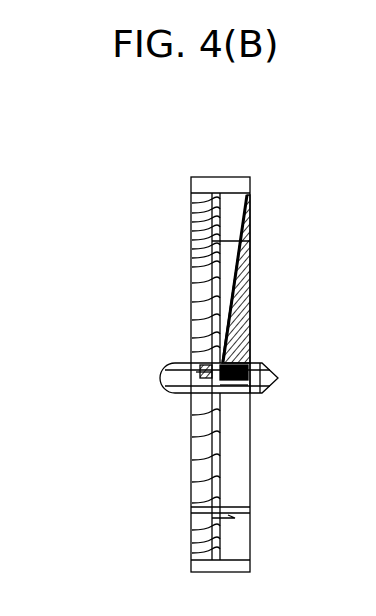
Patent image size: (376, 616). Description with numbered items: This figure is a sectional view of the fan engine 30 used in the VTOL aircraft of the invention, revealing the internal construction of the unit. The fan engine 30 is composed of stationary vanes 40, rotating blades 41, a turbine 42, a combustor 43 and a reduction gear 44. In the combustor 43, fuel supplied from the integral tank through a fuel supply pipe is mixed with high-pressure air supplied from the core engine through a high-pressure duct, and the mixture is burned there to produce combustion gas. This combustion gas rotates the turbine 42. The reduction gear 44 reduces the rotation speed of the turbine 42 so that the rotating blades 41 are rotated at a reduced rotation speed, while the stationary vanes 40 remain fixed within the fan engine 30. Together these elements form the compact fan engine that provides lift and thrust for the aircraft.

The fan engine 30 is at (174, 236).
The stationary vanes 40 is at (190, 300).
The rotating blades 41 is at (251, 273).
The turbine 42 is at (176, 355).
The combustor 43 is at (158, 391).
The reduction gear 44 is at (258, 402).